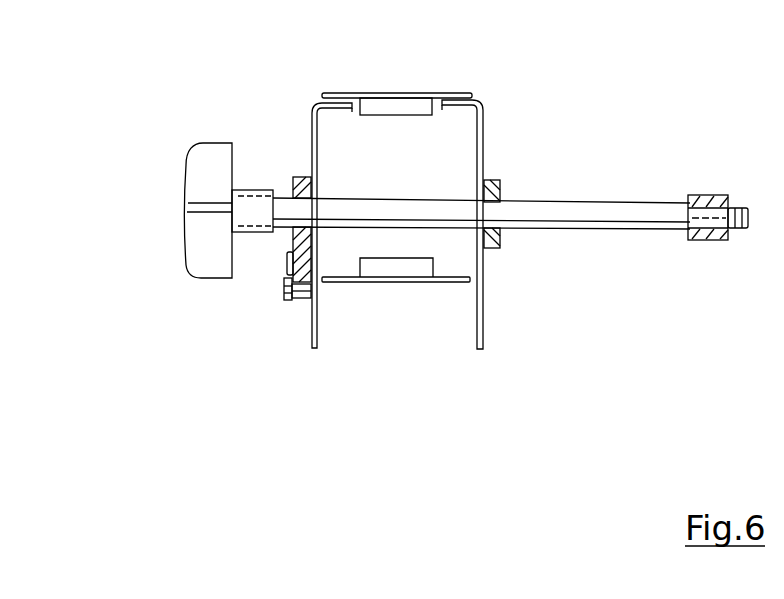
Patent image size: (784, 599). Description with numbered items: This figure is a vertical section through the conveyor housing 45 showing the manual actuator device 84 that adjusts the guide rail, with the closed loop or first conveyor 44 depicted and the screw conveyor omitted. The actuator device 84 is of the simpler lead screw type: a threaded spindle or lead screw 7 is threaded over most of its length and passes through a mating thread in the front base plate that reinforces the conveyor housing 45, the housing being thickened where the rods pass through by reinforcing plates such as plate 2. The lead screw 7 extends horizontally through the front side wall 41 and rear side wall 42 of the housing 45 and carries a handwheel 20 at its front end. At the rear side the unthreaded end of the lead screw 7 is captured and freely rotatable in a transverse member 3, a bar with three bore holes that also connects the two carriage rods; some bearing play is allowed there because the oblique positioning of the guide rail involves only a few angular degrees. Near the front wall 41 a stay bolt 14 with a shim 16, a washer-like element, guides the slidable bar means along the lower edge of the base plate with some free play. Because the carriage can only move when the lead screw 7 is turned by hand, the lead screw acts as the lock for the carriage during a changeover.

The plate 2 is at (497, 249).
The transverse member 3 is at (713, 197).
The lead screw 7 is at (575, 229).
The stay bolt 14 is at (284, 343).
The shim 16 is at (258, 356).
The handwheel 20 is at (208, 158).
The side wall 41 is at (312, 125).
The side wall 42 is at (483, 157).
The first conveyor 44 is at (410, 95).
The conveyor housing 45 is at (507, 102).
The manual actuator device 84 is at (168, 253).